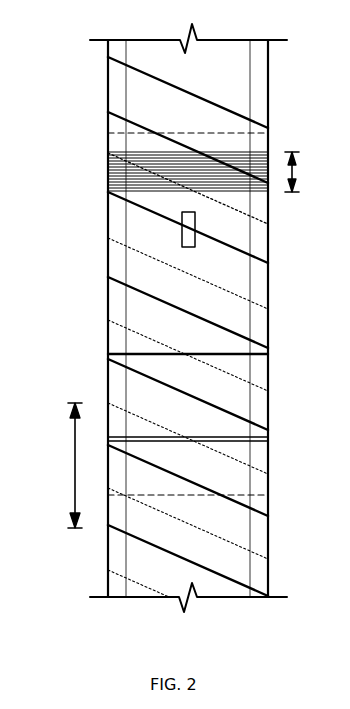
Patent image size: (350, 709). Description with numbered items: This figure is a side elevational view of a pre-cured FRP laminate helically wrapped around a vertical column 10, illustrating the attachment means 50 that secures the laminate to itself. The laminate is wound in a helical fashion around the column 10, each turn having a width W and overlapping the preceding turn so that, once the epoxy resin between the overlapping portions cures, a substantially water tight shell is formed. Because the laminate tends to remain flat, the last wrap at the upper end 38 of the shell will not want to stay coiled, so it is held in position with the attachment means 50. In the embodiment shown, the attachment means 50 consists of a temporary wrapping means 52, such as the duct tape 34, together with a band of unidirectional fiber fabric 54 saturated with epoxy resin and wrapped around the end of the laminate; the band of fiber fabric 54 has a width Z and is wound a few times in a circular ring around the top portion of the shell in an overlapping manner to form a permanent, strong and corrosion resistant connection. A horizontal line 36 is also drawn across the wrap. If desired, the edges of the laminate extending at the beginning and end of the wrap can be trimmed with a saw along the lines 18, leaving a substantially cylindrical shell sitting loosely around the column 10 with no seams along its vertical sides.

The vertical column 10 is at (152, 584).
The lines 18 is at (188, 132).
The duct tape 34 is at (190, 219).
The line 36 is at (235, 353).
The upper end 38 is at (235, 434).
The attachment means 50 is at (276, 146).
The temporary wrapping means 52 is at (172, 232).
The band of unidirectional fiber fabric 54 is at (121, 162).
The width W is at (74, 466).
The width Z is at (293, 172).